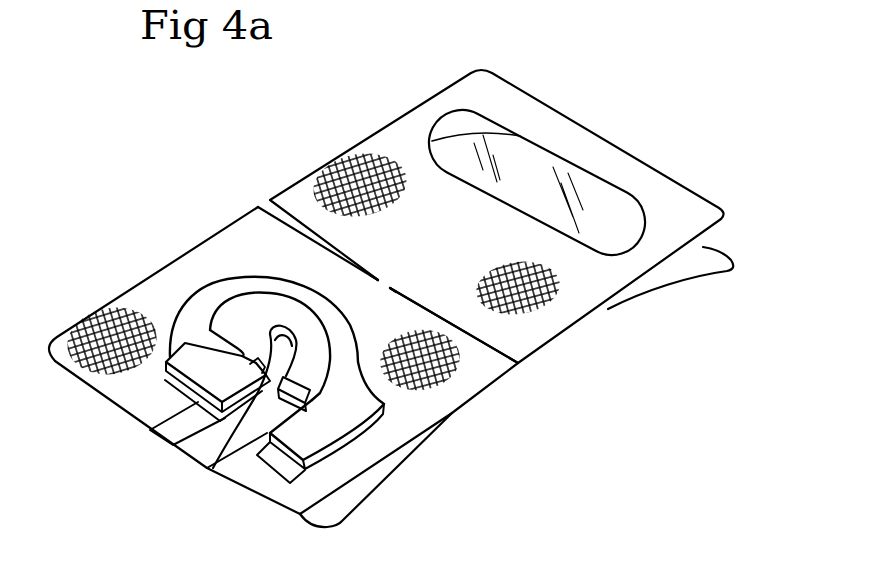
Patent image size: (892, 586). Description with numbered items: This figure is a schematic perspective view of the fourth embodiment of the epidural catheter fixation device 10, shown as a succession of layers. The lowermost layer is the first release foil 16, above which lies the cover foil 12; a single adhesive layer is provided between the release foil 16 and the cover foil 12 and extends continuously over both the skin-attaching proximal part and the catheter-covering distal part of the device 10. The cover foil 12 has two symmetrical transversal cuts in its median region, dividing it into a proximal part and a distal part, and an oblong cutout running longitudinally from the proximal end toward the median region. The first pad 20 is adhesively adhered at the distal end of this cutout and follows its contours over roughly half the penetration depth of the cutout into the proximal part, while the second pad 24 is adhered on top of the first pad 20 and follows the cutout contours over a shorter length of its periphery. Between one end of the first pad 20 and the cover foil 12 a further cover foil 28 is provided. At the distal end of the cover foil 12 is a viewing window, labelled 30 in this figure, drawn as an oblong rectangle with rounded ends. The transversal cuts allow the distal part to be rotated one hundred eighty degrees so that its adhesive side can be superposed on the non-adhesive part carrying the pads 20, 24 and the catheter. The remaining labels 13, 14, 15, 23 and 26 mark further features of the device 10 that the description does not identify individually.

The epidural catheter fixation device 10 is at (663, 137).
The cover foil 12 is at (603, 295).
The fold line 13 is at (270, 206).
The base plate 14 is at (458, 402).
The hinge gap / slot 15 is at (444, 220).
The first release foil 16 is at (706, 265).
The first pad 20 is at (316, 433).
The slot / recess 23 is at (213, 343).
The second pad 24 is at (207, 371).
The projection / lug 26 is at (326, 510).
The cover foil 28 is at (282, 465).
The window / aperture 30 is at (536, 157).